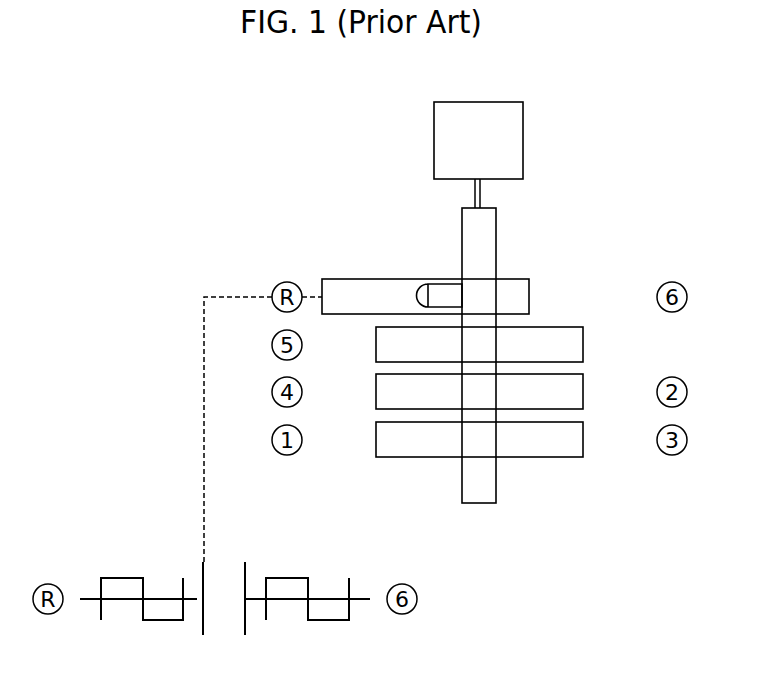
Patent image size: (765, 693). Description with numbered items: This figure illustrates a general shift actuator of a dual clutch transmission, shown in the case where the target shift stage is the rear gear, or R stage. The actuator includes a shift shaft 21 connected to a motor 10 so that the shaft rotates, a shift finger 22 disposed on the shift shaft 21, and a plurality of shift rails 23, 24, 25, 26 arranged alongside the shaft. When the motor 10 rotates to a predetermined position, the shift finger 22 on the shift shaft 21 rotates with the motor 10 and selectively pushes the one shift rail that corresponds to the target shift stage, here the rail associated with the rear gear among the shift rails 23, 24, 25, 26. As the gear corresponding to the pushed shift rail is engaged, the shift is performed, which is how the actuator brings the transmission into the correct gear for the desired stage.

The motor 10 is at (523, 148).
The shift shaft 21 is at (497, 247).
The shift finger 22 is at (446, 285).
The shift rail 23 is at (529, 300).
The shift rail 24 is at (583, 346).
The shift rail 25 is at (583, 393).
The shift rail 26 is at (583, 440).